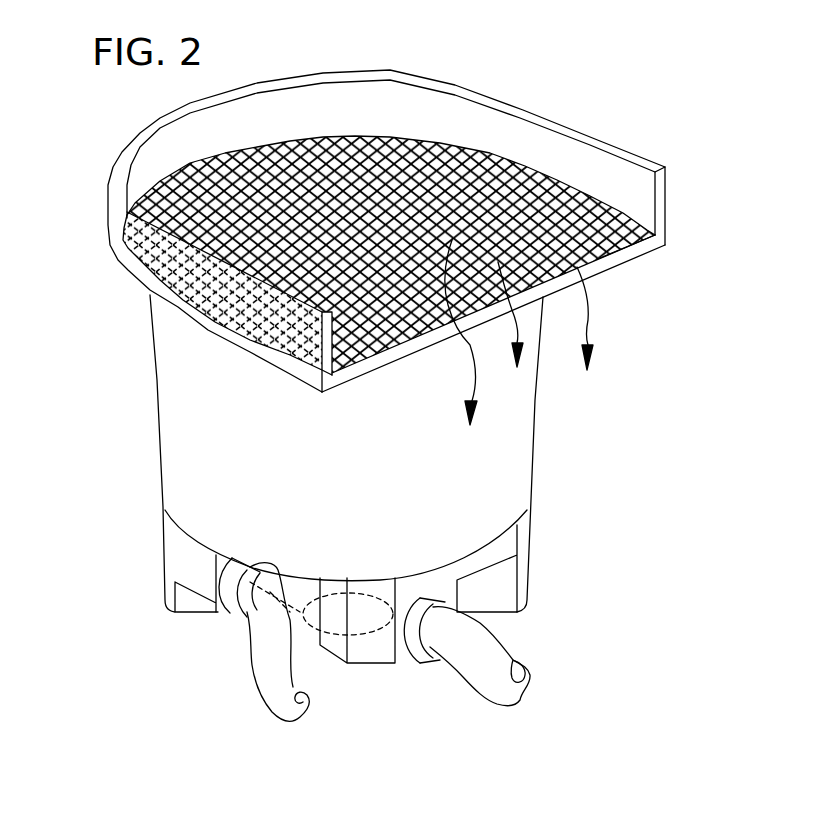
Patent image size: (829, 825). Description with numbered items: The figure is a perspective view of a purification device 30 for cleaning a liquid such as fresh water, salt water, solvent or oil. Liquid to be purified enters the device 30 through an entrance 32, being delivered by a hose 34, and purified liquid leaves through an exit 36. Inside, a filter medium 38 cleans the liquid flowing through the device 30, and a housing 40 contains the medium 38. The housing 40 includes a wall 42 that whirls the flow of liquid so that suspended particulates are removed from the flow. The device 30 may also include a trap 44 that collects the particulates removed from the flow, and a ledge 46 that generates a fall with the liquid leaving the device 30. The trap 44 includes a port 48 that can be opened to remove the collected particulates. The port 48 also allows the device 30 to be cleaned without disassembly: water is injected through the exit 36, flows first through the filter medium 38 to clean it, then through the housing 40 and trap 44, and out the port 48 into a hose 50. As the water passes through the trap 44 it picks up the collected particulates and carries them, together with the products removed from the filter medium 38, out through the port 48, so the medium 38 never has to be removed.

The purification device 30 is at (630, 303).
The entrance 32 is at (206, 625).
The hose 34 is at (267, 693).
The exit 36 is at (553, 145).
The filter medium 38 is at (427, 187).
The housing 40 is at (533, 440).
The wall 42 is at (425, 434).
The trap 44 is at (488, 582).
The ledge 46 is at (600, 222).
The port 48 is at (383, 588).
The hose 50 is at (500, 681).